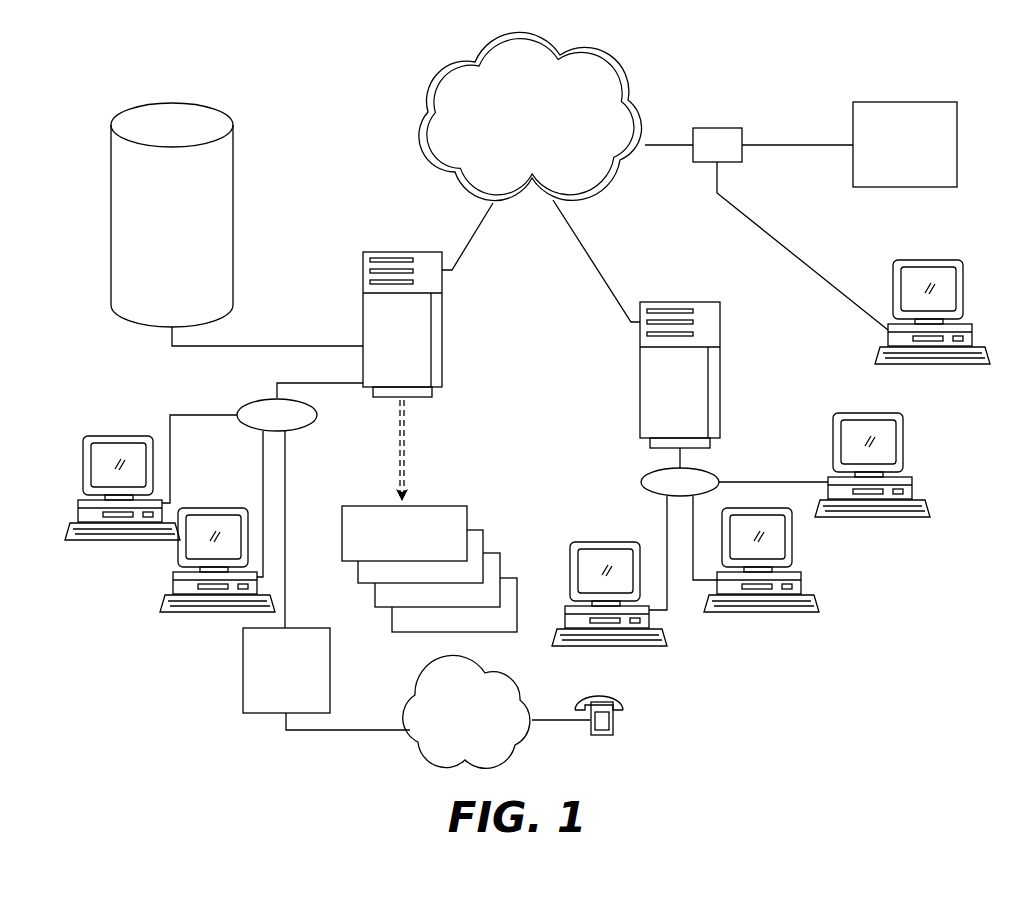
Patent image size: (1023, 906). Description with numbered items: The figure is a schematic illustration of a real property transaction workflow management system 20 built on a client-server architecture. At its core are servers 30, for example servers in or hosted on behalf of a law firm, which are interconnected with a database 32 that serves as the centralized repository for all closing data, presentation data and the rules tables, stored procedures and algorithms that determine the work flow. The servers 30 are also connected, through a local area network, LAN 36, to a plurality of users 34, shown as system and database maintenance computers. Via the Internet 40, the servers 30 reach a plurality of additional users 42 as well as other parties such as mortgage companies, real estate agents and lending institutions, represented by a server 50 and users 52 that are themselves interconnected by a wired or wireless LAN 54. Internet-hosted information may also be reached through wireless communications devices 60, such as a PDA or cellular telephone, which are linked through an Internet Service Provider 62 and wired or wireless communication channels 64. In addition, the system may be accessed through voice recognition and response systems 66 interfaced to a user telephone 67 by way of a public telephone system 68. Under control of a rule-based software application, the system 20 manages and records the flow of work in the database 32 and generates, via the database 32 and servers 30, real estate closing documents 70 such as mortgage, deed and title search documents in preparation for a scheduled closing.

The system 20 is at (338, 108).
The servers 30 is at (447, 376).
The database 32 is at (124, 103).
The users 34 is at (93, 548).
The LAN 36 is at (306, 432).
The Internet 40 is at (634, 82).
The additional users 42 is at (963, 372).
The server 50 is at (727, 411).
The users 52 is at (926, 528).
The LAN 54 is at (633, 476).
The wireless communications devices 60 is at (968, 94).
The Internet Service Provider 62 is at (731, 121).
The communication channels 64 is at (596, 262).
The voice recognition and response systems 66 is at (232, 711).
The user telephone 67 is at (618, 730).
The public telephone system 68 is at (418, 748).
The real estate closing documents 70 is at (474, 512).